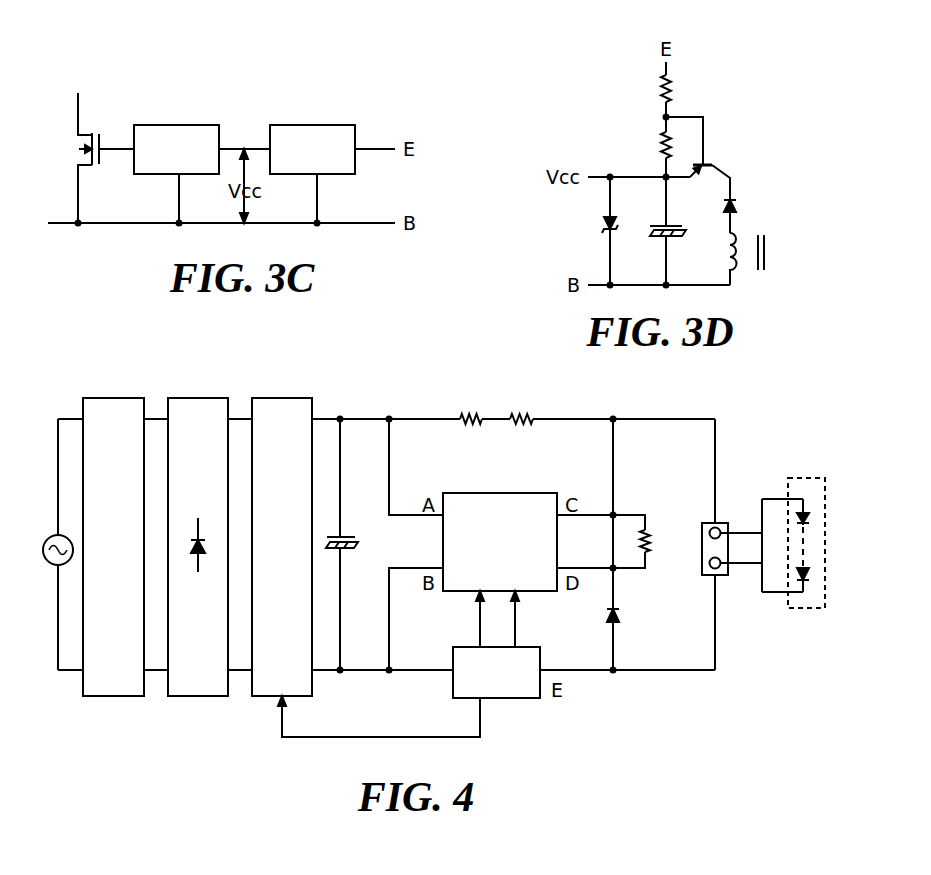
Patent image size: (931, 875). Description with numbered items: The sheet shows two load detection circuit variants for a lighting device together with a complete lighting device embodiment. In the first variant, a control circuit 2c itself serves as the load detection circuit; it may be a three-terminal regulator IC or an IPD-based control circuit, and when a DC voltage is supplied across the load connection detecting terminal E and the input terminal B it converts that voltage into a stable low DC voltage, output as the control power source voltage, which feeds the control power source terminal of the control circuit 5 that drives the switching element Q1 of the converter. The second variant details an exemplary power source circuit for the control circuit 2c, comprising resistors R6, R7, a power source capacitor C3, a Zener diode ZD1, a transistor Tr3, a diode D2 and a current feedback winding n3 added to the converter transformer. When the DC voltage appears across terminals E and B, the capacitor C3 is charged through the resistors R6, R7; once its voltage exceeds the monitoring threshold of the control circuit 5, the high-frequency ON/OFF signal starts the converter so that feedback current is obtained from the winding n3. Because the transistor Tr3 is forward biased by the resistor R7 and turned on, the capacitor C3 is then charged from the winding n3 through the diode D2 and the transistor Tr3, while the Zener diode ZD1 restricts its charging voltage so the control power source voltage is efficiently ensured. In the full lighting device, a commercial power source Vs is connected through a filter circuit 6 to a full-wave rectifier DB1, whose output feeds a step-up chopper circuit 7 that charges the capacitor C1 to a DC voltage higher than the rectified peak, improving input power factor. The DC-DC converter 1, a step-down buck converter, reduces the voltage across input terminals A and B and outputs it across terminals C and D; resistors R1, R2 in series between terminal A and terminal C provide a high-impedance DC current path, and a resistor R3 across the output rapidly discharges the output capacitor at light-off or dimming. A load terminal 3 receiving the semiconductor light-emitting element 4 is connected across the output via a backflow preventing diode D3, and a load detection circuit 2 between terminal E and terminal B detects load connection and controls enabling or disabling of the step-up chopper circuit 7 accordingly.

In FIG. 3C, the control circuit 5 is at (177, 125).
In FIG. 3C, the control circuit 2c is at (313, 125).
In FIG. 3C, the switching element Q1 is at (90, 158).
In FIG. 3D, the resistor R6 is at (651, 89).
In FIG. 3D, the resistor R7 is at (651, 146).
In FIG. 3D, the transistor Tr3 is at (698, 160).
In FIG. 3D, the Zener diode ZD1 is at (589, 231).
In FIG. 3D, the power source capacitor C3 is at (660, 231).
In FIG. 3D, the diode D2 is at (748, 215).
In FIG. 3D, the current feedback winding n3 is at (753, 266).
In FIG. 4, the filter circuit 6 is at (115, 398).
In FIG. 4, the full-wave rectifier DB1 is at (198, 398).
In FIG. 4, the step-up chopper circuit 7 is at (282, 398).
In FIG. 4, the DC-DC converter 1 is at (500, 493).
In FIG. 4, the load detection circuit 2 is at (525, 698).
In FIG. 4, the load terminal 3 is at (722, 523).
In FIG. 4, the semiconductor light-emitting element 4 is at (808, 608).
In FIG. 4, the resistor R1 is at (470, 406).
In FIG. 4, the resistor R2 is at (521, 406).
In FIG. 4, the resistor R3 is at (649, 541).
In FIG. 4, the capacitor C1 is at (355, 544).
In FIG. 4, the backflow preventing diode D3 is at (632, 617).
In FIG. 4, the commercial power source Vs is at (50, 544).